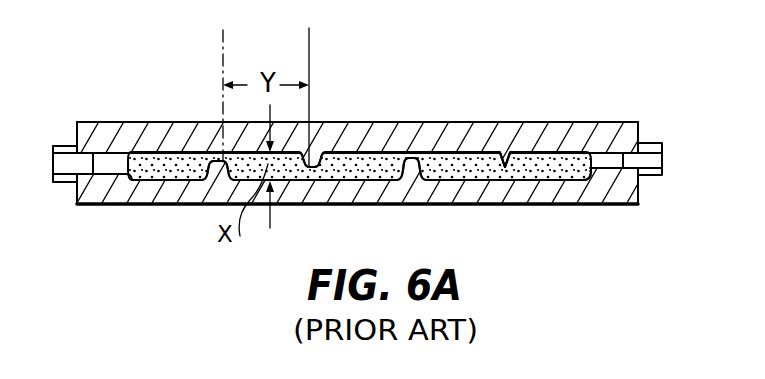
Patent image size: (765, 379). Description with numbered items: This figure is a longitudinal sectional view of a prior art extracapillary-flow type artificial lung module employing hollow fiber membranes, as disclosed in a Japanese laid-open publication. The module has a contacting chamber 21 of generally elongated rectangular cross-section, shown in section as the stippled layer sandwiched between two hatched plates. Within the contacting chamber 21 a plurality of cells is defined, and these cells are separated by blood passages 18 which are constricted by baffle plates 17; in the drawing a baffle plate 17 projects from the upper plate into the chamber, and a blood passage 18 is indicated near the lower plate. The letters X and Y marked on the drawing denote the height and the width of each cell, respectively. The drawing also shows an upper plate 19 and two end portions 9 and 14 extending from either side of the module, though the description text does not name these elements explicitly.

The lead terminal (left) 9 is at (65, 160).
The lead terminal (right) 14 is at (652, 162).
The baffle plate 17 is at (509, 166).
The blood passage 18 is at (517, 181).
The upper plate 19 is at (378, 122).
The contacting chamber 21 is at (473, 152).